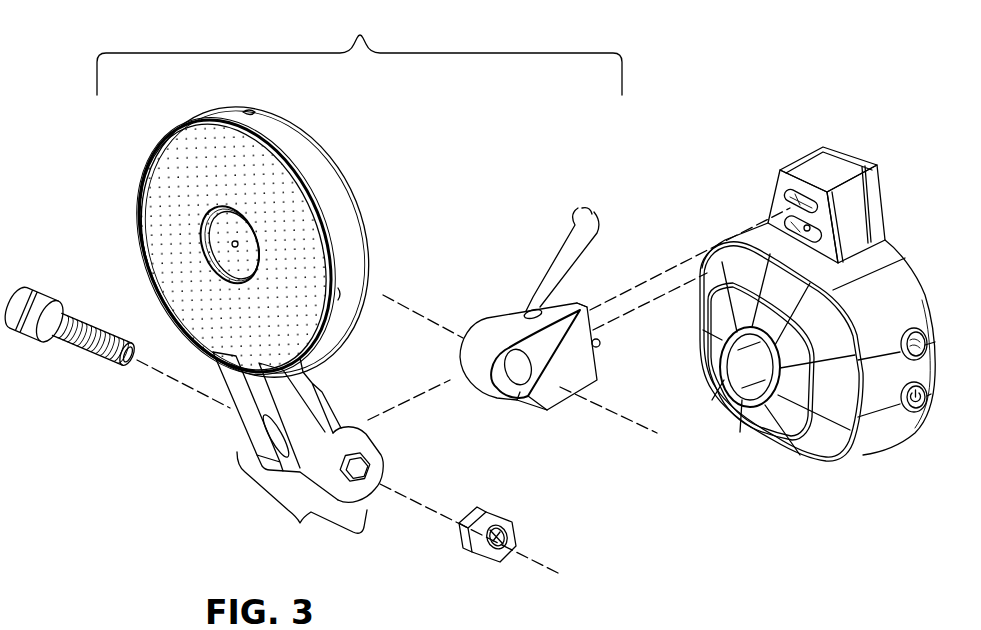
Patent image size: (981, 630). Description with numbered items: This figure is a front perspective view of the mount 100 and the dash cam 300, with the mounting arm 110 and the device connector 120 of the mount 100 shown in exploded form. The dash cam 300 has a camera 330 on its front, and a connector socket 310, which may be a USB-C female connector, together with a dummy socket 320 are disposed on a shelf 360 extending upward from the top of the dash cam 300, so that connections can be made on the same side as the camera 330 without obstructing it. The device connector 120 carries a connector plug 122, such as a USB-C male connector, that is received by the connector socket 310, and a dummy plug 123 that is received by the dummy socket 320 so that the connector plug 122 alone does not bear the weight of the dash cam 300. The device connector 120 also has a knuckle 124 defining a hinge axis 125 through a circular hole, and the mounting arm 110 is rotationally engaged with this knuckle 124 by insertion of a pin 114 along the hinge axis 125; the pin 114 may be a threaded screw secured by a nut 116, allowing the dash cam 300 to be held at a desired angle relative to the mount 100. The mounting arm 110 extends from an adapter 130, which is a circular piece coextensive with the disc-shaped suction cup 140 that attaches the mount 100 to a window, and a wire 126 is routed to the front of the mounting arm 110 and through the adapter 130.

The mount 100 is at (359, 49).
The mounting arm 110 is at (298, 454).
The pin 114 is at (78, 318).
The nut 116 is at (500, 515).
The device connector 120 is at (557, 398).
The connector plug 122 is at (592, 312).
The dummy plug 123 is at (600, 344).
The knuckle 124 is at (505, 390).
The hinge axis 125 is at (442, 327).
The wire 126 is at (571, 249).
The adapter 130 is at (313, 173).
The suction cup 140 is at (167, 173).
The dash cam 300 is at (888, 453).
The connector socket 310 is at (788, 196).
The dummy socket 320 is at (785, 222).
The camera 330 is at (747, 387).
The shelf 360 is at (838, 158).